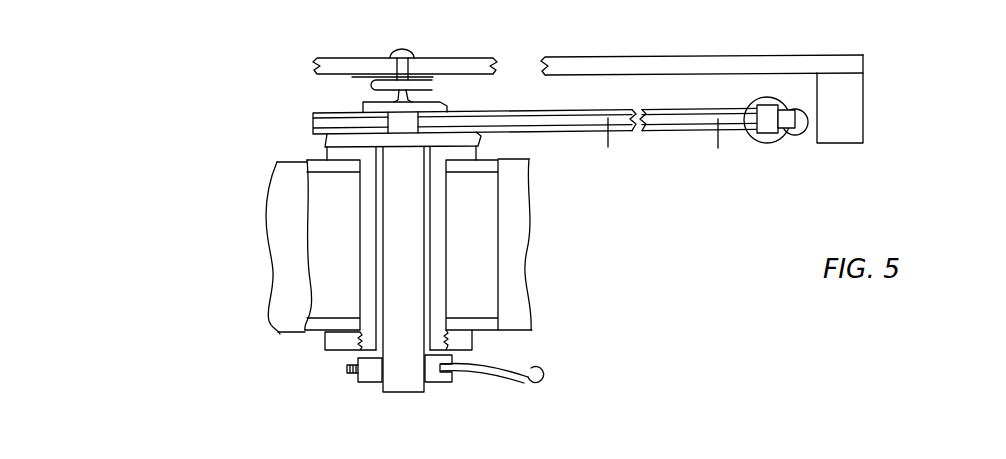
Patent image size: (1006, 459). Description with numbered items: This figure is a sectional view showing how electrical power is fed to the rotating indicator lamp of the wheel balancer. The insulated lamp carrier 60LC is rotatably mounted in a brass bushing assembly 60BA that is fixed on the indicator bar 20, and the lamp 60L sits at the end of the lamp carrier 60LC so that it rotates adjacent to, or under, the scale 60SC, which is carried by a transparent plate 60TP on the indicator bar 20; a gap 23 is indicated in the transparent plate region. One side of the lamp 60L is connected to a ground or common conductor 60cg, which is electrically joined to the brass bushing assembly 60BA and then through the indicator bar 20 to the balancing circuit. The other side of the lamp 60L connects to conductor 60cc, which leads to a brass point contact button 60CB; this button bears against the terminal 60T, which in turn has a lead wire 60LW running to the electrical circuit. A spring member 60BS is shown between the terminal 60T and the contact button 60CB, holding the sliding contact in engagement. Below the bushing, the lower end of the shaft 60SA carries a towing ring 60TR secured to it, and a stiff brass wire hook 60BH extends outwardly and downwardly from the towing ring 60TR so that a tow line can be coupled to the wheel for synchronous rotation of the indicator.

The indicator bar 20 is at (522, 235).
The gap between plate sections 23 is at (511, 50).
The transparent plate 60TP is at (690, 56).
The scale 60SC is at (862, 87).
The terminal 60T is at (404, 49).
The lead wire 60LW is at (390, 57).
The belleville spring washer 60BS is at (368, 87).
The brass point contact button 60CB is at (443, 108).
The lamp 60L is at (788, 107).
The conductor 60cc is at (550, 110).
The common conductor 60cg is at (617, 144).
The lamp carrier 60LC is at (739, 147).
The brass bushing assembly 60BA is at (372, 282).
The shaft 60SA is at (398, 373).
The towing ring 60TR is at (435, 373).
The brass wire hook 60BH is at (502, 368).